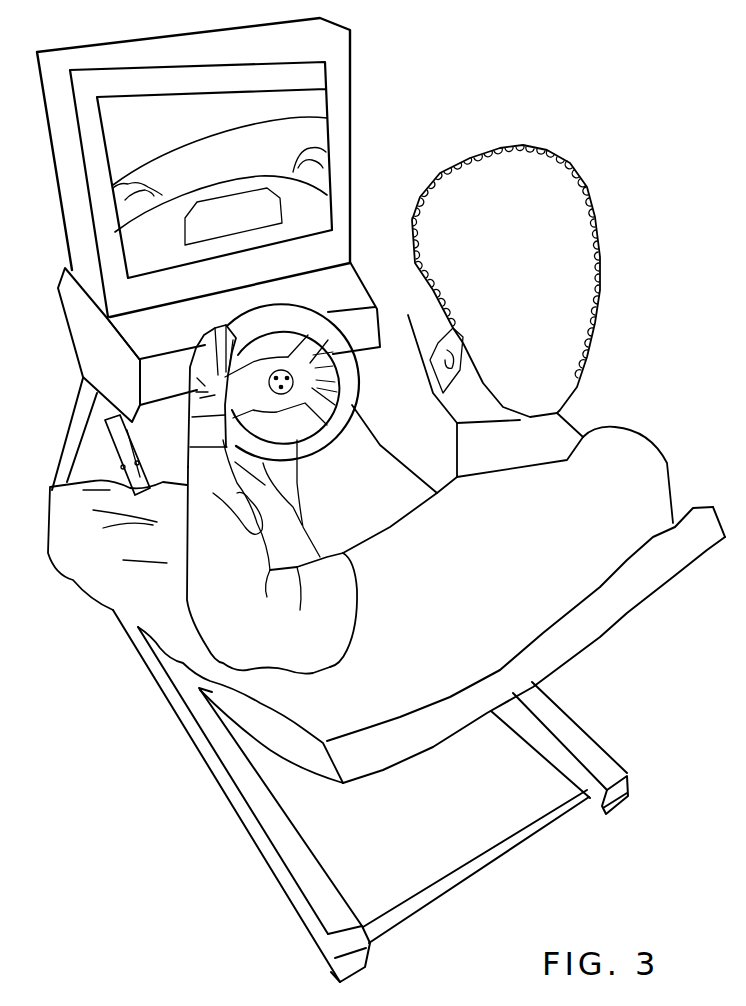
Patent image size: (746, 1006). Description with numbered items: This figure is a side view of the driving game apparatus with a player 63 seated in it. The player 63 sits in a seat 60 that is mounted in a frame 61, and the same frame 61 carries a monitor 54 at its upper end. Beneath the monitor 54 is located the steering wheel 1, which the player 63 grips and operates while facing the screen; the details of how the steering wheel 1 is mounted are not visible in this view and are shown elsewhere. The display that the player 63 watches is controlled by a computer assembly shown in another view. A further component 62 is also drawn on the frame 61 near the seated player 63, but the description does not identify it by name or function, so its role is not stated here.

The monitor 54 is at (353, 104).
The steering wheel 1 is at (350, 404).
The seat 60 is at (606, 632).
The frame 61 is at (613, 733).
The control device 62 is at (165, 461).
The player 63 is at (669, 464).